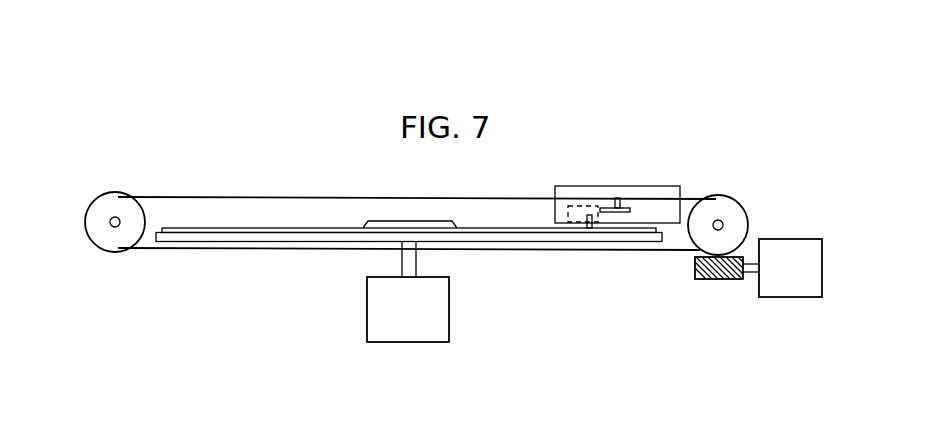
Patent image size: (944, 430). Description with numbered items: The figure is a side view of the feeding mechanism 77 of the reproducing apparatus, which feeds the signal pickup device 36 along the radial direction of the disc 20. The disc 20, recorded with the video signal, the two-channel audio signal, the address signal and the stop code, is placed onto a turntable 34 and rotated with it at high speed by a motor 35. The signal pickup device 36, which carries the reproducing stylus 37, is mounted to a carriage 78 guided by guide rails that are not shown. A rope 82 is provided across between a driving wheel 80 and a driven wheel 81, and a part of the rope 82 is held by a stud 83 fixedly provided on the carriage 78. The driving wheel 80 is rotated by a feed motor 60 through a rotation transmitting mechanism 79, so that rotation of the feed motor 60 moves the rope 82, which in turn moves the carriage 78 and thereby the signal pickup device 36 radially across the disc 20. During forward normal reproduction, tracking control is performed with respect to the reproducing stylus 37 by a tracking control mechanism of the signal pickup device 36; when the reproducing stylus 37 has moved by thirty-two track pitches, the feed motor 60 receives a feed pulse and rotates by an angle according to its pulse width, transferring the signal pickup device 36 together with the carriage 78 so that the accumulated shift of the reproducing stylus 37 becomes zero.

The disc 20 is at (276, 228).
The turntable 34 is at (287, 242).
The motor 35 is at (445, 311).
The signal pickup device 36 is at (580, 207).
The reproducing stylus 37 is at (592, 228).
The feed motor 60 is at (785, 297).
The feeding mechanism 77 is at (733, 196).
The carriage 78 is at (647, 186).
The rotation transmitting mechanism 79 is at (725, 281).
The driving wheel 80 is at (746, 217).
The driven wheel 81 is at (117, 190).
The rope 82 is at (330, 197).
The stud 83 is at (617, 198).